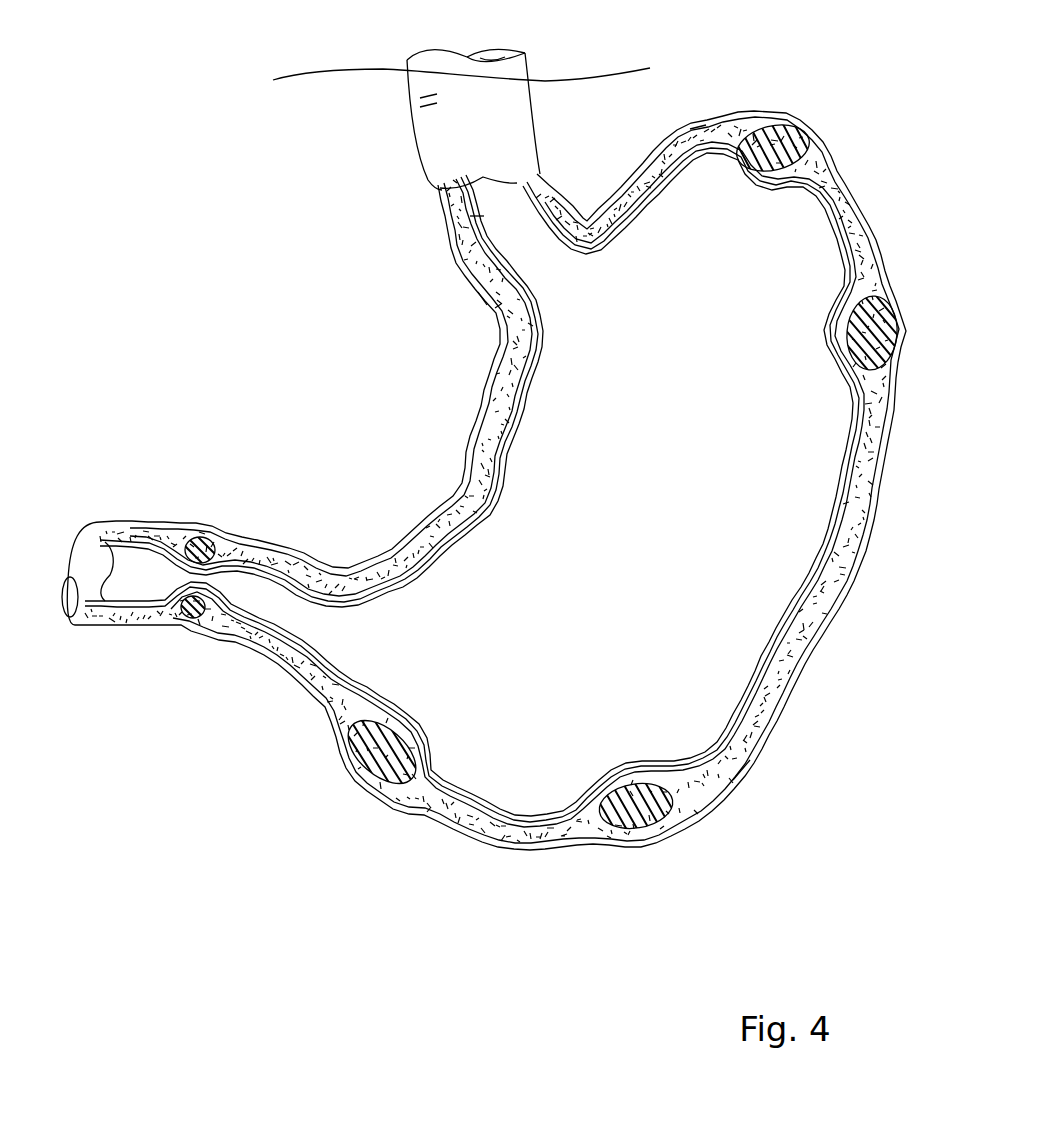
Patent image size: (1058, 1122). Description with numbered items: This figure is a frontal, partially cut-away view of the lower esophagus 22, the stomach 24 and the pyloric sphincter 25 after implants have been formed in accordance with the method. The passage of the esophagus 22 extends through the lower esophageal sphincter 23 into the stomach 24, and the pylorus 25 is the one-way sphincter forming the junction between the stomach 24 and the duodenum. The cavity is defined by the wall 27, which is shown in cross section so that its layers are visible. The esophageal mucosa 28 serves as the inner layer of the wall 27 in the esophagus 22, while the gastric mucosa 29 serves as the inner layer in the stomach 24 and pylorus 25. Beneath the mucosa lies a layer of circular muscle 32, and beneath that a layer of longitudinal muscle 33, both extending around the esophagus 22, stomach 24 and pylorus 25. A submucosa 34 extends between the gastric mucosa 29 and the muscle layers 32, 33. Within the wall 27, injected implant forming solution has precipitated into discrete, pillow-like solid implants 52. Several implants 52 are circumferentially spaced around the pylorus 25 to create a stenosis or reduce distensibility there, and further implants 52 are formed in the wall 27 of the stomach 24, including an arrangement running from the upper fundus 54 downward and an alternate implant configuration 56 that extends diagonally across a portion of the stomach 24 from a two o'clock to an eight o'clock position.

The esophagus 22 is at (413, 130).
The lower esophageal sphincter 23 is at (470, 303).
The stomach 24 is at (496, 468).
The pyloric sphincter 25 is at (192, 535).
The wall 27 is at (496, 480).
The esophageal mucosa 28 is at (477, 216).
The gastric mucosa 29 is at (492, 520).
The circular muscle 32 is at (420, 530).
The longitudinal muscle 33 is at (502, 330).
The submucosa 34 is at (398, 600).
The implants 52 is at (778, 140).
The fundus 54 is at (697, 122).
The implant configuration 56 is at (731, 778).